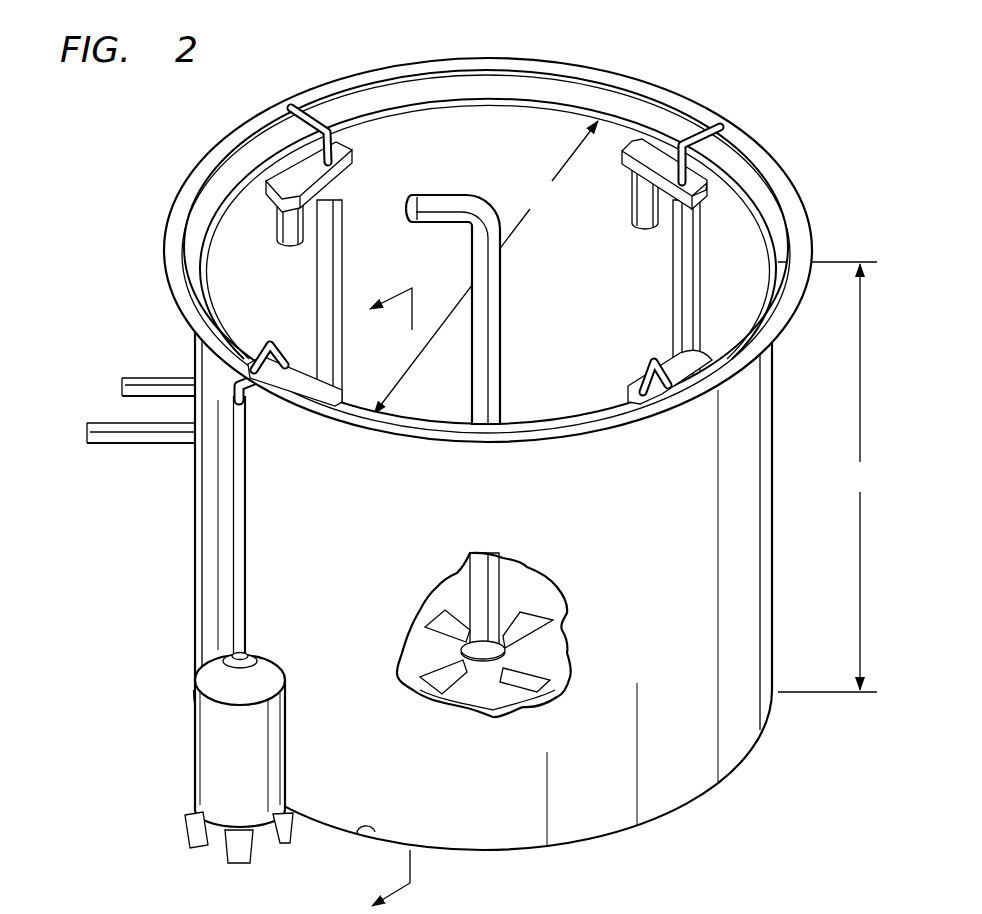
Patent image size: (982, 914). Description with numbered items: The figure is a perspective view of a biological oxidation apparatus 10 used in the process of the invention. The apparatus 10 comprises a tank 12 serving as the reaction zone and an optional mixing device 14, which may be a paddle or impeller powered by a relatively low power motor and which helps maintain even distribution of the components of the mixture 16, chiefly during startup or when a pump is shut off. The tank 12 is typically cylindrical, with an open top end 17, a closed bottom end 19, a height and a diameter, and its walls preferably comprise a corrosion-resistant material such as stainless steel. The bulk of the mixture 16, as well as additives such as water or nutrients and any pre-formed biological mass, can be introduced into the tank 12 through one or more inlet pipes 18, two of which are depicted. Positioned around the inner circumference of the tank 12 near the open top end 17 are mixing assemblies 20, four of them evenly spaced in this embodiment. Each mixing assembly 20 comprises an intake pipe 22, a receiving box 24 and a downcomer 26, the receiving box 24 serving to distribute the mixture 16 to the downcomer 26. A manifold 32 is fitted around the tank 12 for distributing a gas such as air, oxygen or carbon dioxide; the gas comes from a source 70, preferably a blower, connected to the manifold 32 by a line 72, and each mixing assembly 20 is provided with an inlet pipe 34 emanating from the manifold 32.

The biological oxidation apparatus 10 is at (478, 458).
The tank 12 is at (687, 778).
The mixing device 14 is at (541, 686).
The mixture 16 is at (500, 173).
The open top end 17 is at (413, 99).
The inlet pipes 18 is at (131, 376).
The closed bottom end 19 is at (361, 836).
The mixing assembly 20 is at (470, 218).
The intake pipe 22 is at (279, 232).
The receiving box 24 is at (295, 167).
The downcomer 26 is at (345, 247).
The manifold 32 is at (558, 57).
The inlet pipe 34 is at (328, 126).
The source 70 is at (184, 764).
The line 72 is at (248, 553).